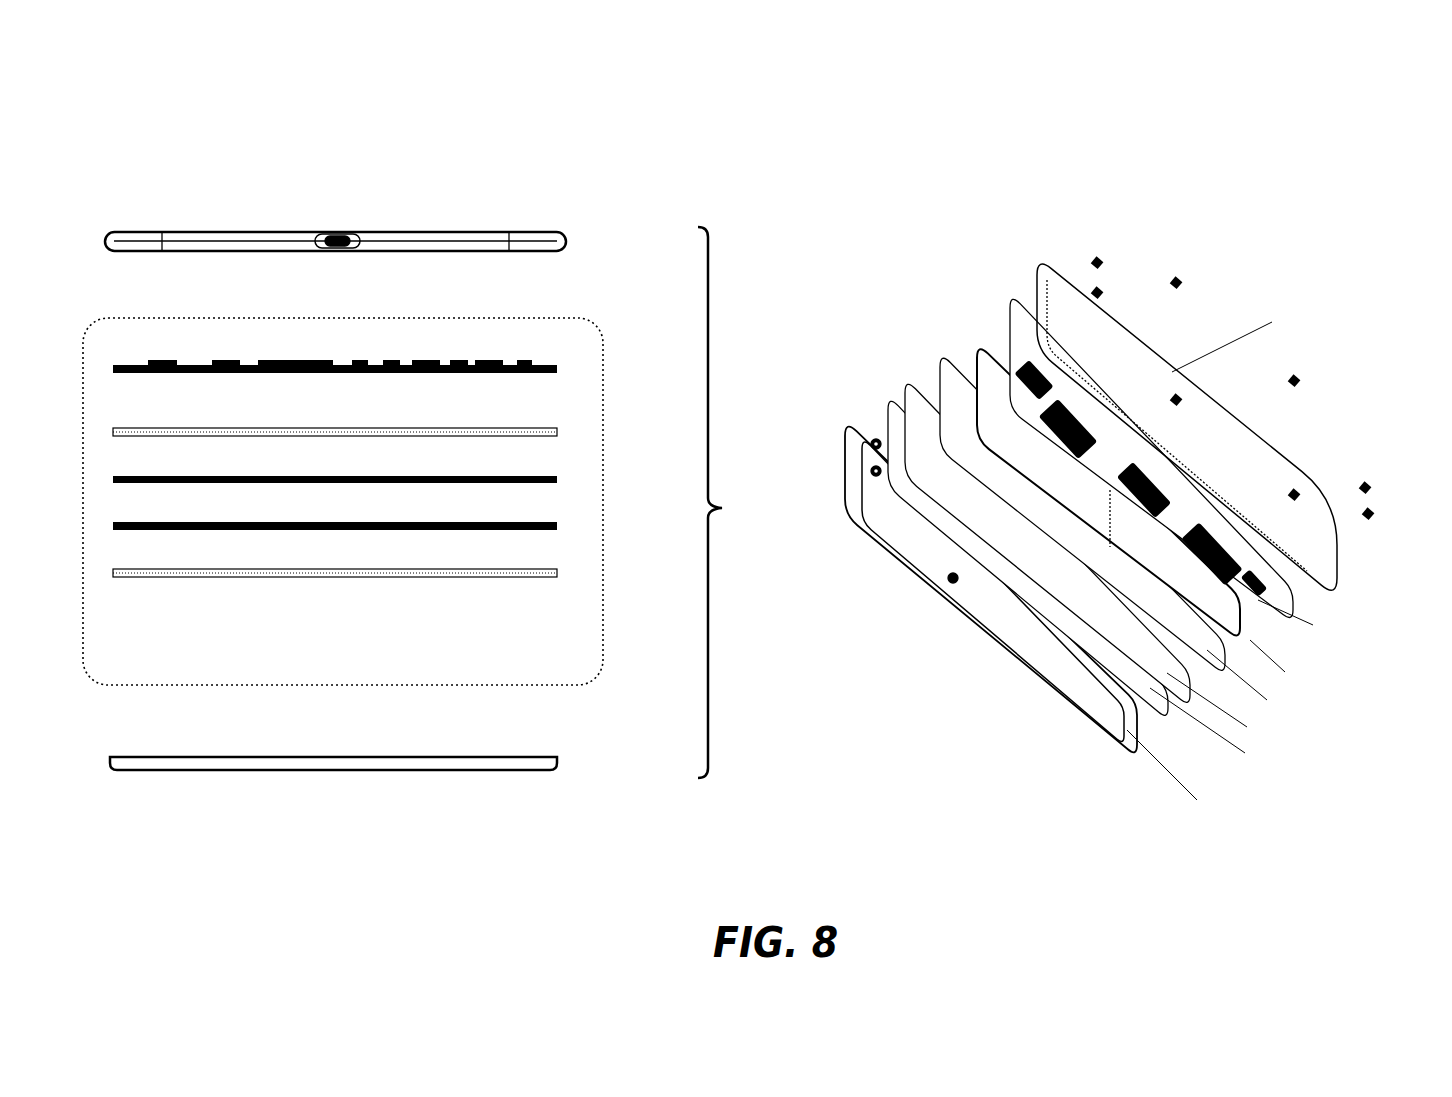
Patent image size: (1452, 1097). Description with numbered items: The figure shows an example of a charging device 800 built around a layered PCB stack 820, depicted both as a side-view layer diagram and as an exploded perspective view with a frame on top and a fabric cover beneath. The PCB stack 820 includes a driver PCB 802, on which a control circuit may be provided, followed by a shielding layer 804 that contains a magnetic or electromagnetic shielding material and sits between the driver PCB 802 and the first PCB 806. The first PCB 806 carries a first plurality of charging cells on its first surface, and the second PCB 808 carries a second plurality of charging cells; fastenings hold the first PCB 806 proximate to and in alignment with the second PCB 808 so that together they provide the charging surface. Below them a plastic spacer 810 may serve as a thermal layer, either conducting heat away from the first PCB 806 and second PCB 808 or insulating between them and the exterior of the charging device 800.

The charging device 800 is at (138, 78).
The driver PCB 802 is at (214, 378).
The shielding layer 804 is at (214, 442).
The first PCB 806 is at (214, 488).
The second PCB 808 is at (214, 534).
The plastic spacer 810 is at (214, 583).
The PCB stack 820 is at (343, 501).